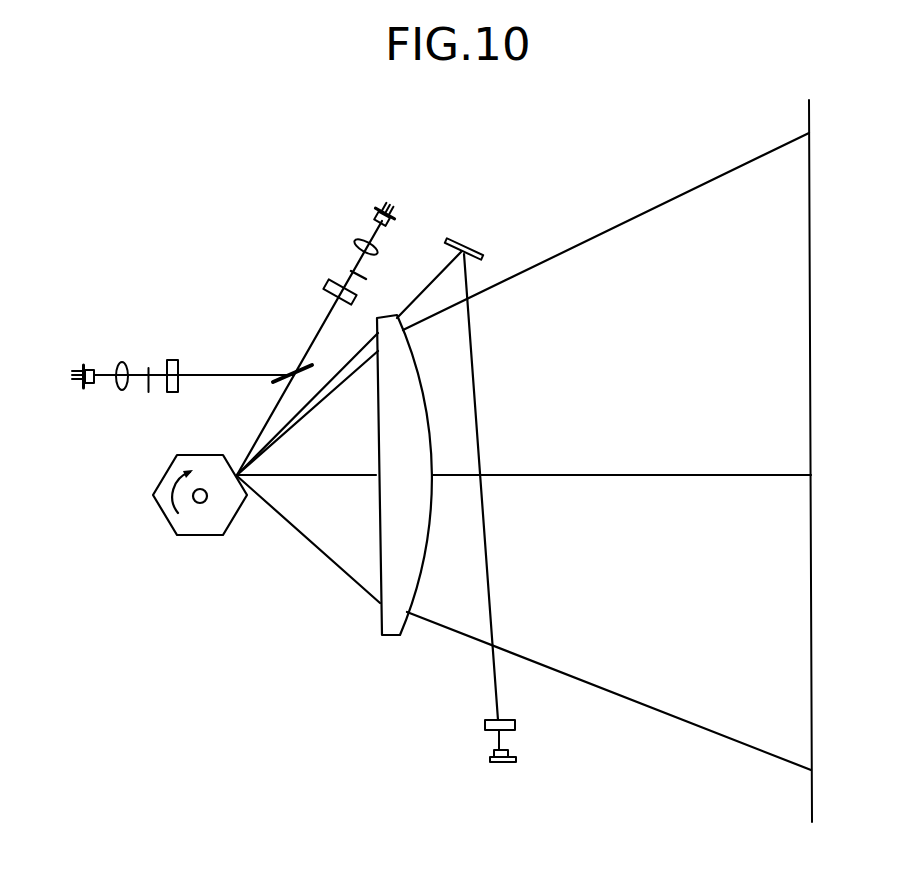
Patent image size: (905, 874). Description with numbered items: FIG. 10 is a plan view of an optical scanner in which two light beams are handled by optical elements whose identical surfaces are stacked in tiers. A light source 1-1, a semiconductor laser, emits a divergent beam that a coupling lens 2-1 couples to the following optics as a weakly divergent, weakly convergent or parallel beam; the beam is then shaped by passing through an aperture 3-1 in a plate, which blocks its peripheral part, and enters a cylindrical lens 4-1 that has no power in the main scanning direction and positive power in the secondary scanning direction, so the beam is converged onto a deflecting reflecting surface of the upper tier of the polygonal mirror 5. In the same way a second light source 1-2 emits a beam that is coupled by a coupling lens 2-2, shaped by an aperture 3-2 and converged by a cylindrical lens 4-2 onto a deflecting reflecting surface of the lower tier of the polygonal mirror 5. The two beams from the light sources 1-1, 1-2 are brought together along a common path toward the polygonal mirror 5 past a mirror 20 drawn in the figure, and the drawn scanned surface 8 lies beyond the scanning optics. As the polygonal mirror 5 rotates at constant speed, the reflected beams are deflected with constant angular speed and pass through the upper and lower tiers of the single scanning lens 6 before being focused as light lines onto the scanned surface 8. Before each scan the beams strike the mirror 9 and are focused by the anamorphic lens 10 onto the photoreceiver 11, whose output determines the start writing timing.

The light source 1-1 is at (376, 208).
The coupling lens 2-1 is at (354, 246).
The aperture 3-1 is at (334, 259).
The cylindrical lens 4-1 is at (323, 289).
The light source 1-2 is at (84, 366).
The coupling lens 2-2 is at (122, 363).
The aperture 3-2 is at (149, 367).
The cylindrical lens 4-2 is at (178, 361).
The beam combining mirror 20 is at (280, 383).
The polygonal mirror 5 is at (200, 536).
The scanning lens 6 is at (428, 553).
The surface to be scanned 8 is at (812, 582).
The mirror 9 is at (471, 251).
The lens 10 is at (485, 725).
The photoreceiver 11 is at (492, 761).